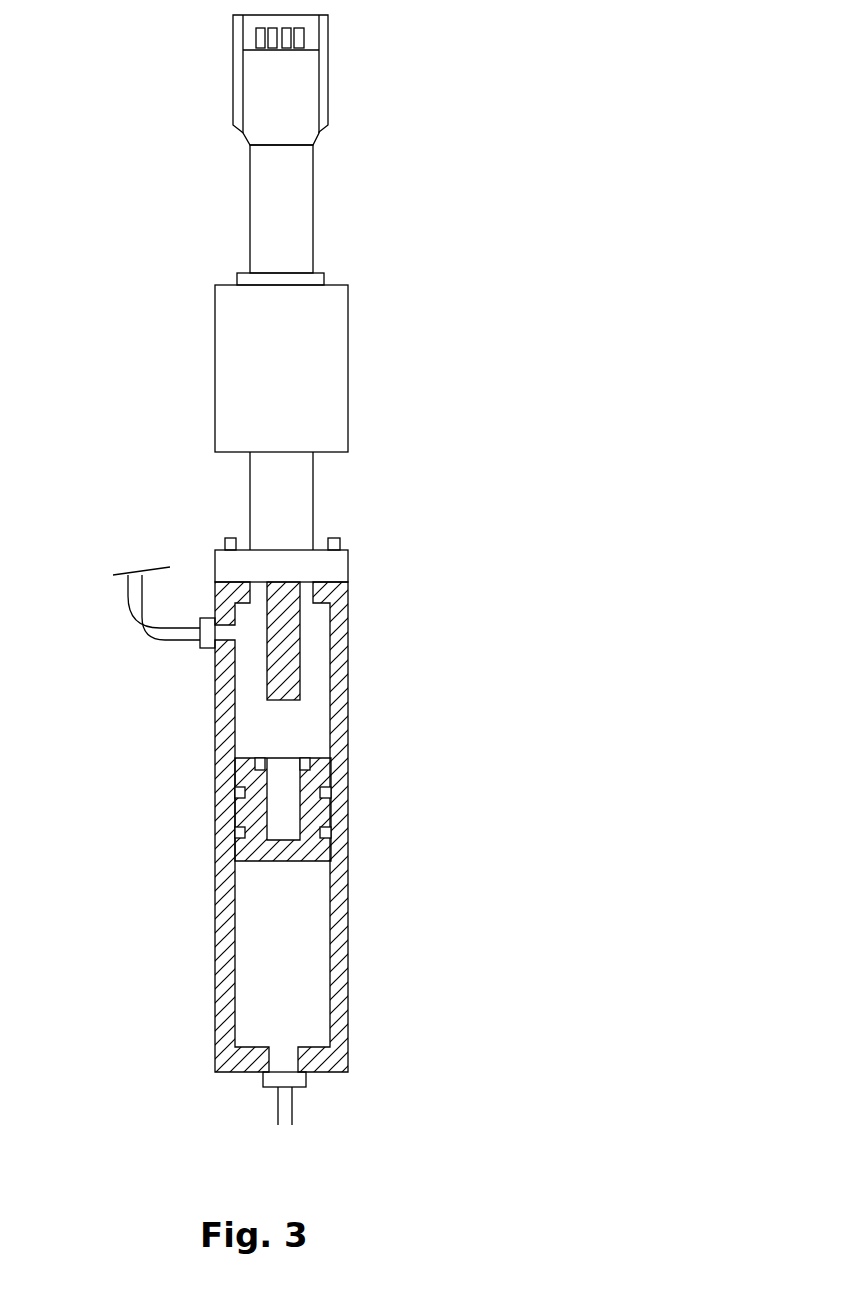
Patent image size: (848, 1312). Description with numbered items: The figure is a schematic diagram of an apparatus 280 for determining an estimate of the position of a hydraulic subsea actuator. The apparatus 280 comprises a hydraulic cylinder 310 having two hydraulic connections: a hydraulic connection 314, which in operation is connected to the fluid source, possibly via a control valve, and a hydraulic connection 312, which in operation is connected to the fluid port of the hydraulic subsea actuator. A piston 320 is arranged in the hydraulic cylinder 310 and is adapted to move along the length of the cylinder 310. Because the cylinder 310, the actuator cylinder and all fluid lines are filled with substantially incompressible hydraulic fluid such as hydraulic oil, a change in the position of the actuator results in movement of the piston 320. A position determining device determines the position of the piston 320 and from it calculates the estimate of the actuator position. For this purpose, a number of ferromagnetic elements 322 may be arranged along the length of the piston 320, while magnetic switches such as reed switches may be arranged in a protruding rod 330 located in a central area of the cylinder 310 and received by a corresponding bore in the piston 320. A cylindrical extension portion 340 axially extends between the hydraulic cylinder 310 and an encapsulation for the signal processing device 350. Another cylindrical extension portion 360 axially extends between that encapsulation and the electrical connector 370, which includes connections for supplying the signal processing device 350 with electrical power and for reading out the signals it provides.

The apparatus 280 is at (433, 562).
The hydraulic cylinder 310 is at (350, 990).
The hydraulic connection 312 is at (278, 1110).
The hydraulic connection 314 is at (127, 620).
The piston 320 is at (303, 805).
The ferromagnetic elements 322 is at (325, 835).
The protruding rod 330 is at (288, 668).
The cylindrical extension portion 340 is at (302, 492).
The signal processing device 350 is at (350, 380).
The cylindrical extension portion 360 is at (322, 203).
The electrical connector 370 is at (327, 90).